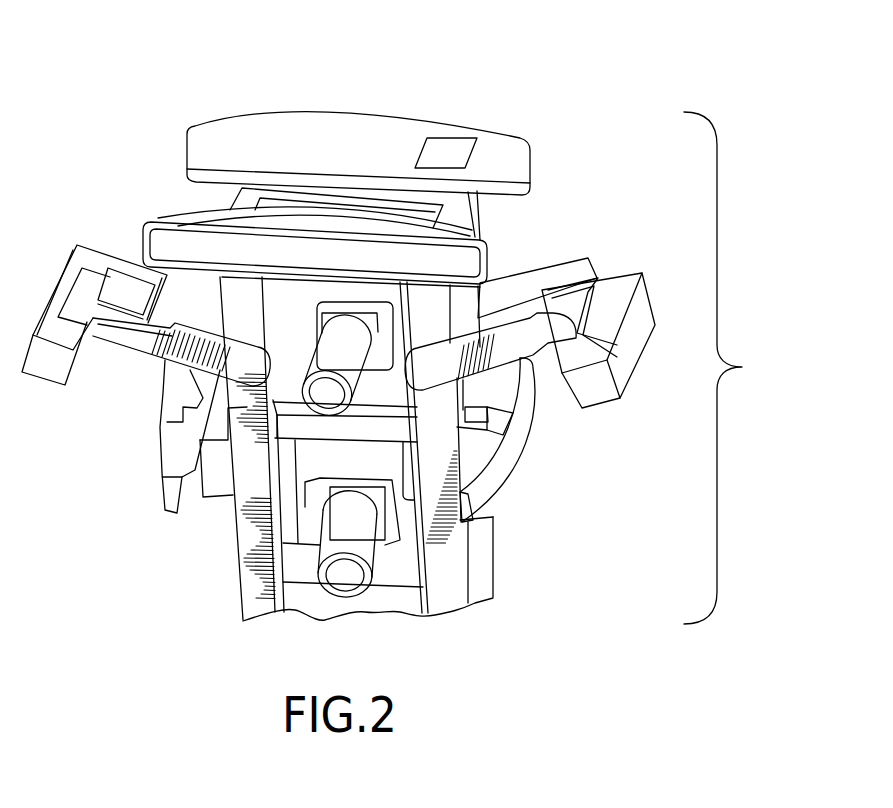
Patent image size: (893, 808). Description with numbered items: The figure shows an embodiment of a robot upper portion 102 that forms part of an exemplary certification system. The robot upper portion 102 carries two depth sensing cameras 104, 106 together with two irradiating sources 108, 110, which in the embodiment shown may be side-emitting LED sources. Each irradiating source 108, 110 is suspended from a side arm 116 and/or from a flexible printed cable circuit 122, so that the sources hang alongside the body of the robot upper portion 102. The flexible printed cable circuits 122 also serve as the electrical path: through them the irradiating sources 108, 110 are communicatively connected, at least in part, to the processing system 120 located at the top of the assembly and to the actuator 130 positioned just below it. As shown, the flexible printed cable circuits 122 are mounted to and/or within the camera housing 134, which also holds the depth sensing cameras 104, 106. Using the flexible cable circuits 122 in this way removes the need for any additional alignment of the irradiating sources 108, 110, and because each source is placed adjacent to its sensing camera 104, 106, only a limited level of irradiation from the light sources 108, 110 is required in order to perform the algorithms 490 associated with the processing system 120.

The robot upper portion 102 is at (742, 368).
The depth sensing camera 104 is at (327, 402).
The depth sensing camera 106 is at (325, 573).
The irradiating source 108 is at (45, 385).
The irradiating source 110 is at (601, 404).
The side arm 116 is at (175, 370).
The processing system 120 is at (313, 112).
The flexible printed cable circuit 122 is at (95, 222).
The actuator 130 is at (166, 218).
The camera housing 134 is at (445, 537).
The algorithms 490 is at (457, 136).